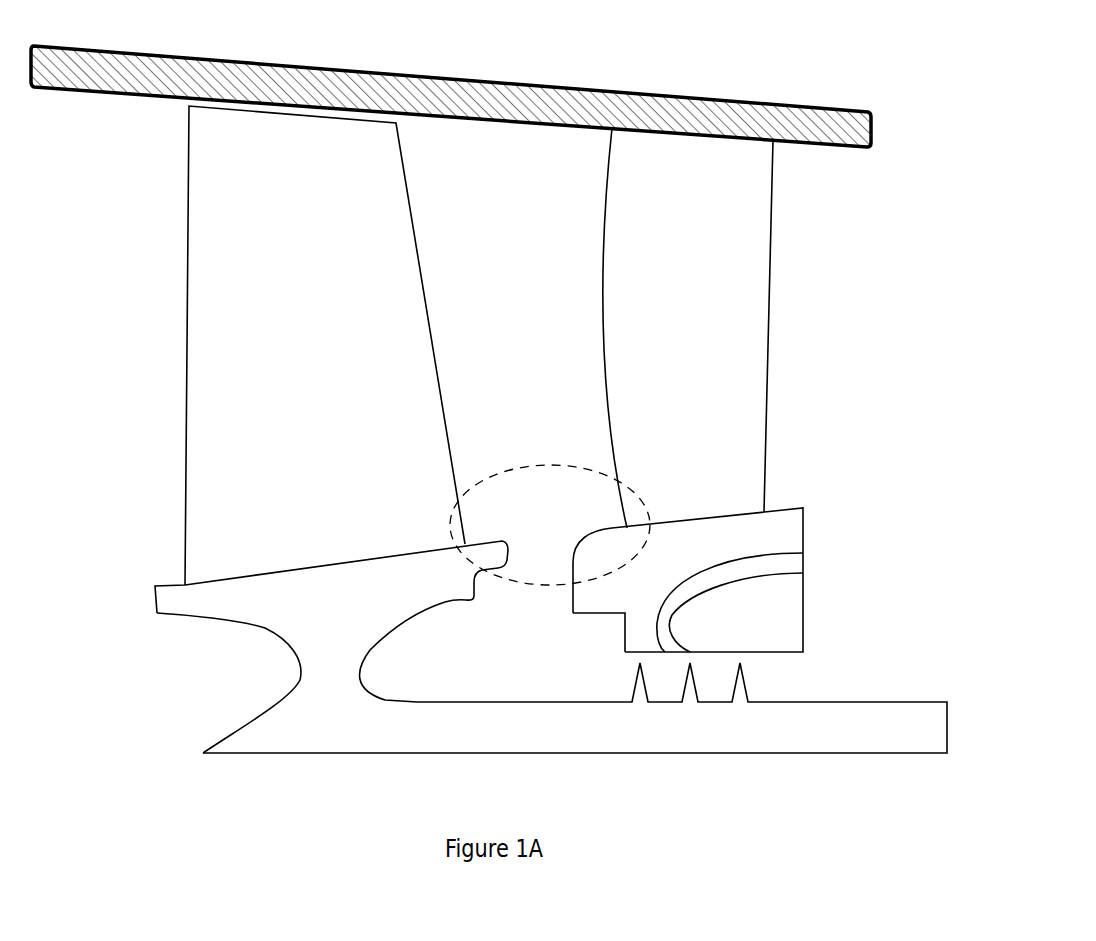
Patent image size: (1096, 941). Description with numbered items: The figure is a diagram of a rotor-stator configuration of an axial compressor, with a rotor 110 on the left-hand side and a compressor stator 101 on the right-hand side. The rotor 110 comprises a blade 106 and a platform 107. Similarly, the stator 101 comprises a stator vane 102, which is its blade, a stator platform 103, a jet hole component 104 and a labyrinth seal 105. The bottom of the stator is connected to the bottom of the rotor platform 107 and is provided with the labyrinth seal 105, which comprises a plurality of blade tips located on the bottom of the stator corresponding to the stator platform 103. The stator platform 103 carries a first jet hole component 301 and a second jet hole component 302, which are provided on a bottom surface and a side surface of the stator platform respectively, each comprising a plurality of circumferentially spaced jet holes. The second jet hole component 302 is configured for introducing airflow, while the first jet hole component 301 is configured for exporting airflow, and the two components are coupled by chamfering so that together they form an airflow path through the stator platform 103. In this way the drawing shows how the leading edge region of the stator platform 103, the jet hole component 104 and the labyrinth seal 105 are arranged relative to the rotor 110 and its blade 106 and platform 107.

The compressor stator 101 is at (772, 399).
The stator vane 102 is at (649, 328).
The stator platform 103 is at (550, 525).
The jet hole component 104 is at (734, 593).
The labyrinth seal 105 is at (752, 682).
The blade 106 is at (325, 345).
The platform 107 is at (331, 647).
The rotor 110 is at (284, 429).
The first jet hole component 301 is at (641, 665).
The second jet hole component 302 is at (810, 616).